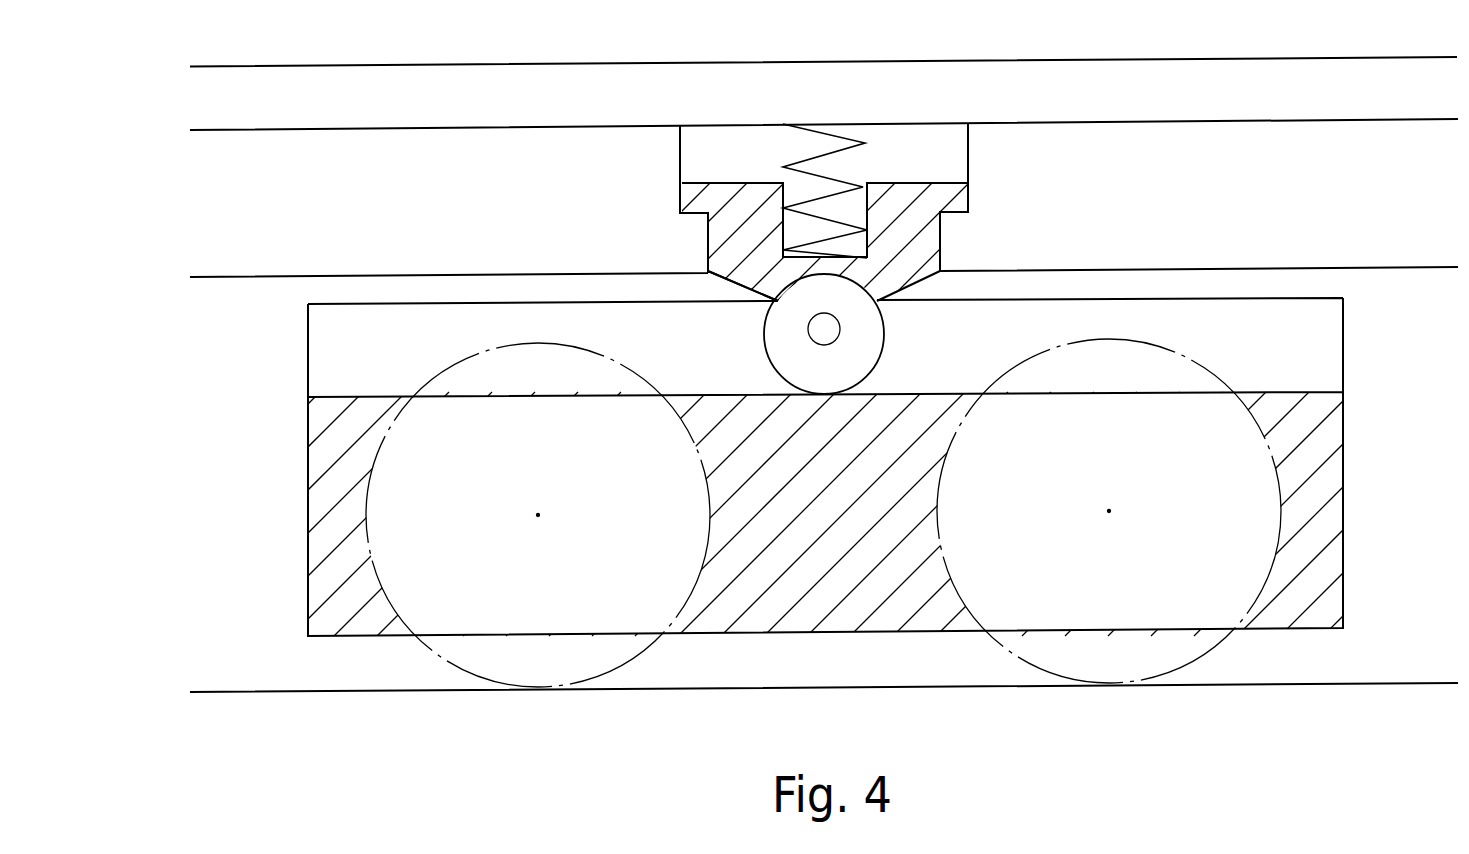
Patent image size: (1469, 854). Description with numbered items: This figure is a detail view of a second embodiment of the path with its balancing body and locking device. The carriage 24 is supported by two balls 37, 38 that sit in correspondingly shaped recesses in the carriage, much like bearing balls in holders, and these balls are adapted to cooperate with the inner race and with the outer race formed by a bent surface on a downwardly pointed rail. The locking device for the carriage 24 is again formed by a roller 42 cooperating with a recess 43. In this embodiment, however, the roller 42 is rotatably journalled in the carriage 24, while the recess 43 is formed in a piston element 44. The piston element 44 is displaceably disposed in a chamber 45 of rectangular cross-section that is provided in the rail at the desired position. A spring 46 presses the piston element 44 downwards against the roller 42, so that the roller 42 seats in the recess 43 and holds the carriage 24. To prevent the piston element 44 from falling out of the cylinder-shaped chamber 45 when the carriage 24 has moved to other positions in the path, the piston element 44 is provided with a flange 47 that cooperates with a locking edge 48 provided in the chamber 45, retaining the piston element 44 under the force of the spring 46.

The carriage 24 is at (1317, 463).
The ball 37 is at (407, 510).
The ball 38 is at (1235, 549).
The roller 42 is at (870, 338).
The recess 43 is at (790, 297).
The piston element 44 is at (905, 230).
The chamber 45 is at (685, 163).
The spring 46 is at (838, 133).
The flange 47 is at (690, 211).
The locking edge 48 is at (953, 213).